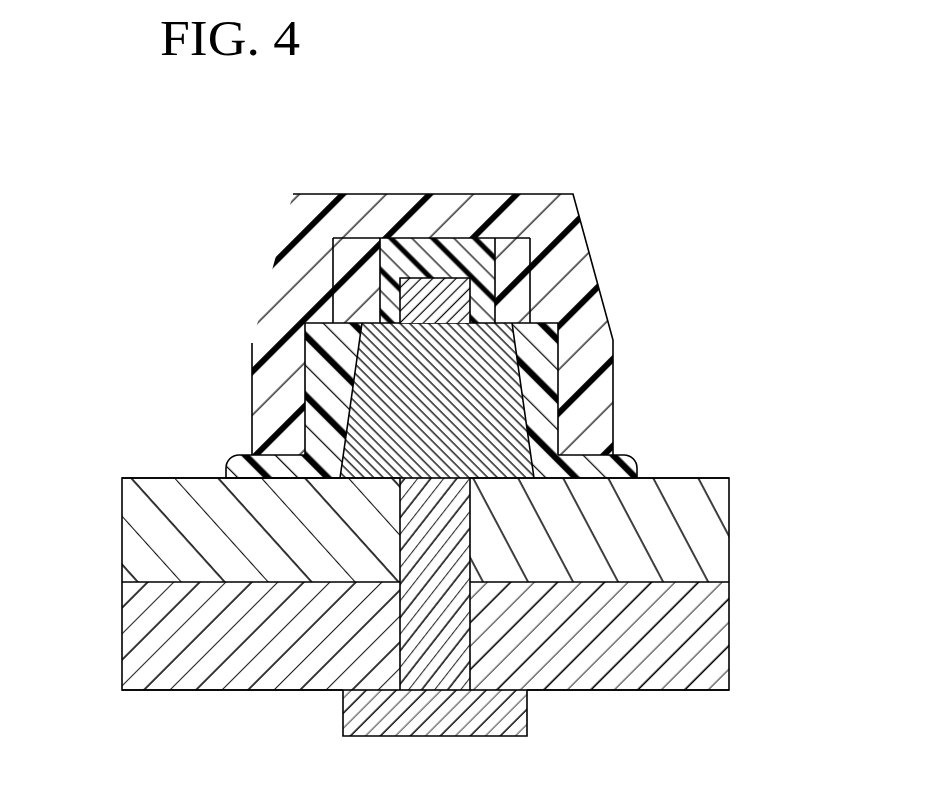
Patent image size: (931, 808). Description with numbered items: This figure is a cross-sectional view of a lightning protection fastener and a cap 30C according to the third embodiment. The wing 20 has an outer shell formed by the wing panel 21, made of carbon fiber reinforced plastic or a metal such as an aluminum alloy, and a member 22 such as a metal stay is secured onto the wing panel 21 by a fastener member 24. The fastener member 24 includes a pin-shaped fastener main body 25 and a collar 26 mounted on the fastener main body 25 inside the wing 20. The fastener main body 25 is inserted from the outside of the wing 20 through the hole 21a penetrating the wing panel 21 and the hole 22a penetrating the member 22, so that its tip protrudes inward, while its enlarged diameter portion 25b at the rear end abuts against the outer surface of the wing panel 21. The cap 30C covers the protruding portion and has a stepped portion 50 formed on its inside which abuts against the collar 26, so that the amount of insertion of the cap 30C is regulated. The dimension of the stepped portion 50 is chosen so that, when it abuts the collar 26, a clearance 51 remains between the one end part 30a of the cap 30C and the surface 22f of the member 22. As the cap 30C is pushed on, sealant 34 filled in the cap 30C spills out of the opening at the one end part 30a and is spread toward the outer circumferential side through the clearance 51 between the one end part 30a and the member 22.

The cap 30C is at (292, 186).
The one end part of the cap 30a is at (265, 447).
The stepped portion 50 is at (342, 355).
The sealant 34 is at (325, 395).
The collar 26 is at (563, 422).
The fastener member 24 is at (738, 372).
The fastener main body 25 is at (472, 553).
The enlarged diameter portion 25b is at (485, 736).
The member 22 is at (718, 568).
The surface of the member 22f is at (153, 478).
The hole of the member 22a is at (397, 582).
The wing panel 21 is at (704, 658).
The hole of the wing panel 21a is at (410, 625).
The wing 20 is at (693, 702).
The clearance 51 is at (268, 470).